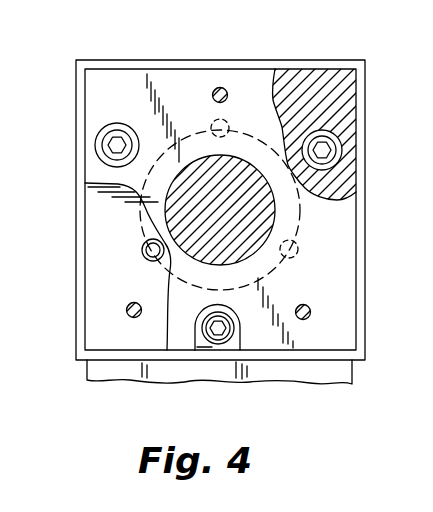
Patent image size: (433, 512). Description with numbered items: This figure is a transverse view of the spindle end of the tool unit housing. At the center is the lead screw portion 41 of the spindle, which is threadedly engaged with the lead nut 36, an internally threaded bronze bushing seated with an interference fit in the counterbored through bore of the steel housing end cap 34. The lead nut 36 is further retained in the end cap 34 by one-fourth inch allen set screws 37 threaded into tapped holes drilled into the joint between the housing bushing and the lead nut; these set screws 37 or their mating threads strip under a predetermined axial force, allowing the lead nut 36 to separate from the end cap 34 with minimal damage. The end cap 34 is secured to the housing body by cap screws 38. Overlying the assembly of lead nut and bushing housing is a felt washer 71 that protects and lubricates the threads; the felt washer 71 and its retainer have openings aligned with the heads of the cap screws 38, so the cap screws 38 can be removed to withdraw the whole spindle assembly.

The housing end cap 34 is at (97, 312).
The lead nut 36 is at (142, 242).
The set screws 37 is at (227, 119).
The cap screws 38 is at (103, 136).
The lead screw portion 41 is at (276, 206).
The felt washer 71 is at (177, 80).